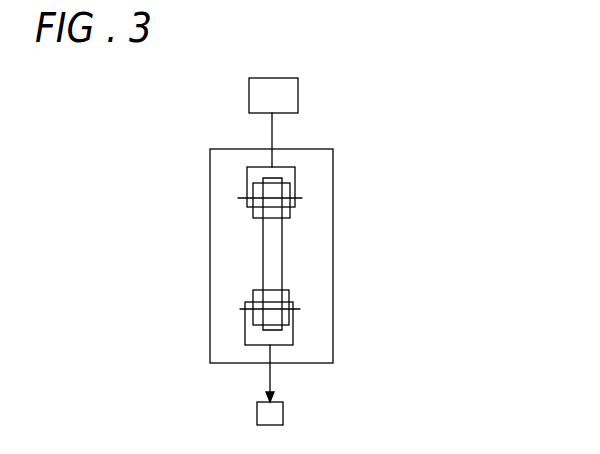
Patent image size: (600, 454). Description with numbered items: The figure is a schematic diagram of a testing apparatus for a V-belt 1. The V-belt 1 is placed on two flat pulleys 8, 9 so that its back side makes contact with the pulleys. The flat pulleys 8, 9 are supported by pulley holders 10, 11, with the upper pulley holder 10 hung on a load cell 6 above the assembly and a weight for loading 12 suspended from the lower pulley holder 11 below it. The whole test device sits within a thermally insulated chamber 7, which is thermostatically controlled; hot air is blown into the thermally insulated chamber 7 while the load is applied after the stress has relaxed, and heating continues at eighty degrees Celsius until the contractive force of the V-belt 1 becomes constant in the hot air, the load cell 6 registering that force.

The V-belt 1 is at (282, 246).
The load cell 6 is at (298, 96).
The thermally insulated chamber 7 is at (333, 274).
The flat pulley 8 is at (291, 211).
The flat pulley 9 is at (290, 297).
The pulley holder 10 is at (295, 173).
The pulley holder 11 is at (294, 333).
The weight for loading 12 is at (283, 415).